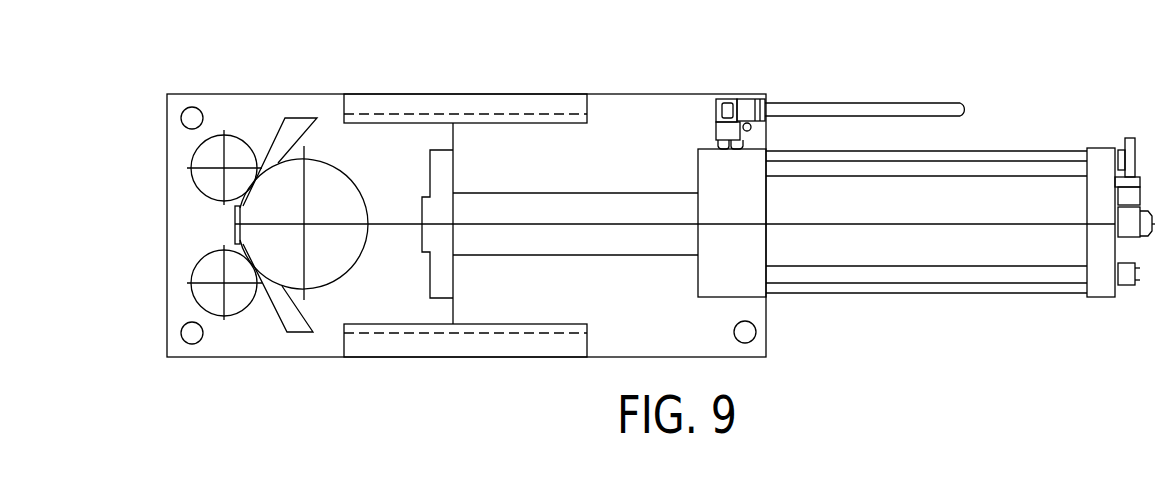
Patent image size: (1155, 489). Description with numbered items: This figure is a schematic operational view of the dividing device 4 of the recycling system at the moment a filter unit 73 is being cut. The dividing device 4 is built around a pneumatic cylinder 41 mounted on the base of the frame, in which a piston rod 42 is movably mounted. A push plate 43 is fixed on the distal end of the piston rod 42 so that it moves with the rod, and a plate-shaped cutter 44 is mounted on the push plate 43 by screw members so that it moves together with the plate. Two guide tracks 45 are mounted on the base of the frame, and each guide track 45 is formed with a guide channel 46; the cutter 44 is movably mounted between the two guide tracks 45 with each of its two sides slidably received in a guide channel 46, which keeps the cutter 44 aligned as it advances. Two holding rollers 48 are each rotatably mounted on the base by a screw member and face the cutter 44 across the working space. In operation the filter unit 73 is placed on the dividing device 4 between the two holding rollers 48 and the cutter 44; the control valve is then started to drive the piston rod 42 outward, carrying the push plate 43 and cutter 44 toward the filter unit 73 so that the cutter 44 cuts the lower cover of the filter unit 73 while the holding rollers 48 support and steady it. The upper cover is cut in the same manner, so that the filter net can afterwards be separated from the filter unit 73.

The dividing device 4 is at (855, 77).
The pneumatic cylinder 41 is at (943, 193).
The piston rod 42 is at (557, 237).
The push plate 43 is at (442, 168).
The plate-shaped cutter 44 is at (338, 145).
The guide tracks 45 is at (428, 108).
The guide channel 46 is at (392, 122).
The holding rollers 48 is at (234, 150).
The filter unit 73 is at (262, 206).